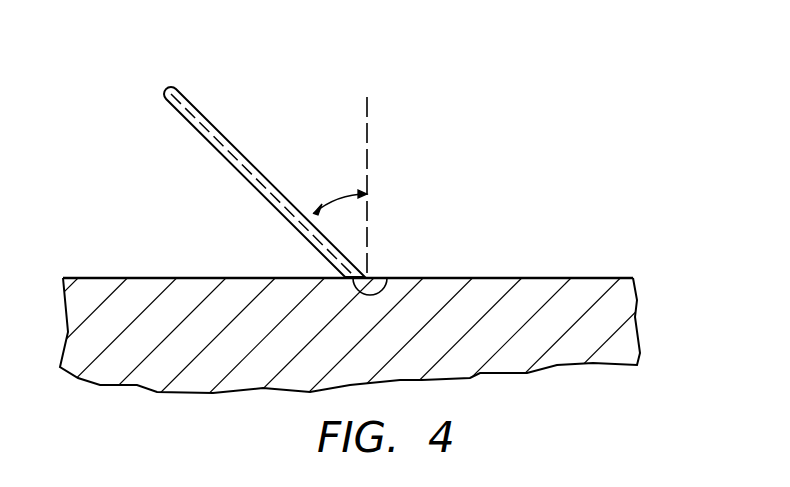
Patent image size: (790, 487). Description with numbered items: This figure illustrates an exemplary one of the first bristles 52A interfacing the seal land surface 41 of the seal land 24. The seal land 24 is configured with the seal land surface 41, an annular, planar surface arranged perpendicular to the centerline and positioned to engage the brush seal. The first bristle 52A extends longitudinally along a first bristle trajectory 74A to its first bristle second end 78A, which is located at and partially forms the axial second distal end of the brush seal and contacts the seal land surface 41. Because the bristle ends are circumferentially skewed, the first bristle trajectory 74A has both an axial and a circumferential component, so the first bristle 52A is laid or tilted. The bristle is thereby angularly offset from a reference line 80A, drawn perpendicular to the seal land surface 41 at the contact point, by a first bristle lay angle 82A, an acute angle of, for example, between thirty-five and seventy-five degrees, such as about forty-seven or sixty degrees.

The seal land 24 is at (647, 311).
The seal land surface 41 is at (562, 278).
The first bristle 52A is at (205, 117).
The first bristle trajectory 74A is at (238, 148).
The first bristle second end 78A is at (387, 278).
The reference line 80A is at (367, 117).
The first bristle lay angle 82A is at (335, 200).